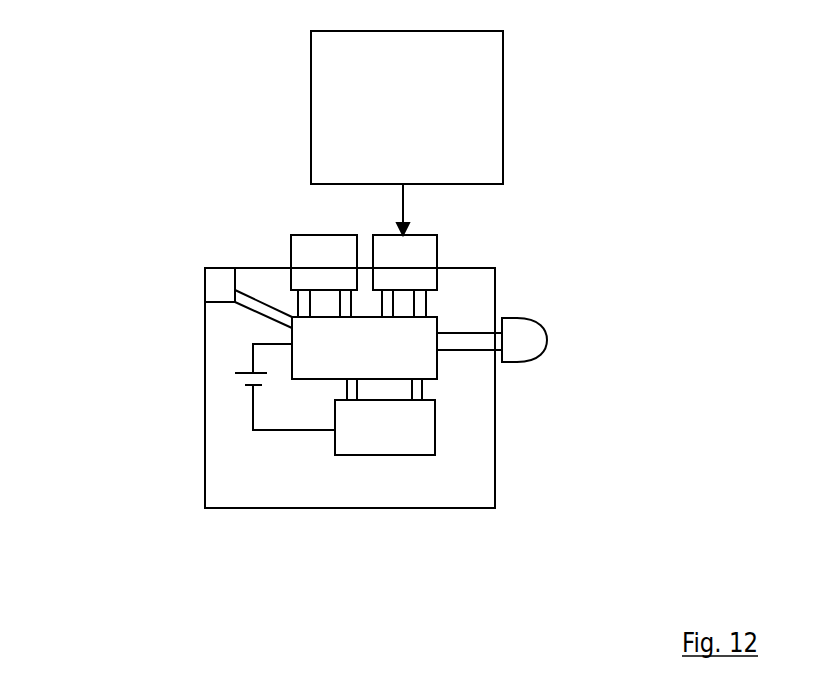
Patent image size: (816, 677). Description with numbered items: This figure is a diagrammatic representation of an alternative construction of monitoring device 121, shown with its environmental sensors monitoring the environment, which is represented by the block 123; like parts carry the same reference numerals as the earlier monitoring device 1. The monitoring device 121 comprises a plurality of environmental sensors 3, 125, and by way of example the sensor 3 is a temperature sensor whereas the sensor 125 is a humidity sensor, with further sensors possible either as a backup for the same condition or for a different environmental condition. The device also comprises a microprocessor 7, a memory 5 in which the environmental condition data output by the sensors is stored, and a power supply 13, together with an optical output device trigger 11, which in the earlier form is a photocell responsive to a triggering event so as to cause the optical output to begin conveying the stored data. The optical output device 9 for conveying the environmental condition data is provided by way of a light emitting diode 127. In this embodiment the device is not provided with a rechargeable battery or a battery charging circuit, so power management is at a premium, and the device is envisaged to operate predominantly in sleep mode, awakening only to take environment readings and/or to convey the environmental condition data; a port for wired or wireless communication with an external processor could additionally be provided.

The monitoring device 1 is at (205, 373).
The environmental sensor 3 is at (430, 243).
The monitoring unit memory 5 is at (403, 434).
The microprocessor 7 is at (423, 330).
The optical output device 9 is at (560, 349).
The photocell 11 is at (213, 290).
The power supply 13 is at (242, 387).
The monitoring device 121 is at (548, 430).
The environment 123 is at (337, 83).
The environmental sensor 125 is at (317, 255).
The light emitting diode 127 is at (530, 337).